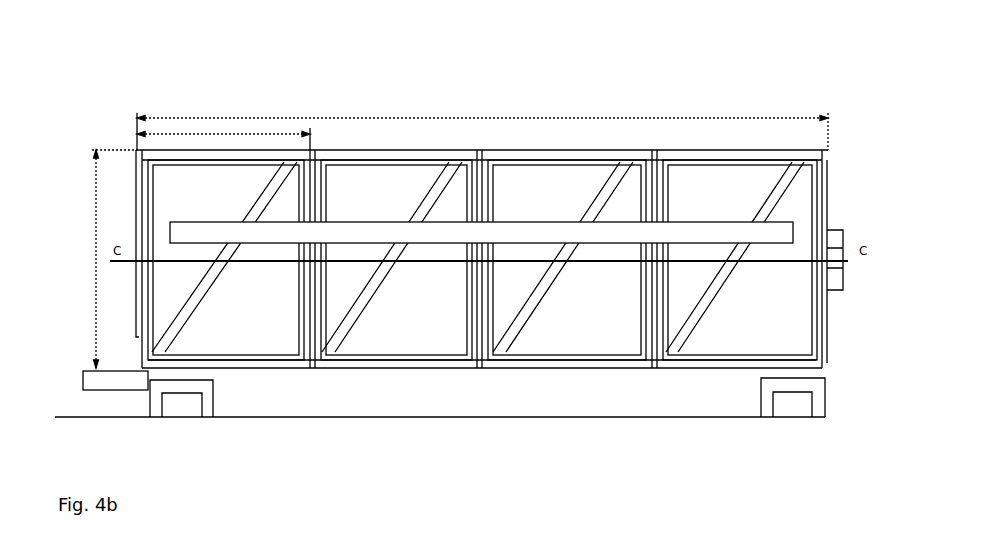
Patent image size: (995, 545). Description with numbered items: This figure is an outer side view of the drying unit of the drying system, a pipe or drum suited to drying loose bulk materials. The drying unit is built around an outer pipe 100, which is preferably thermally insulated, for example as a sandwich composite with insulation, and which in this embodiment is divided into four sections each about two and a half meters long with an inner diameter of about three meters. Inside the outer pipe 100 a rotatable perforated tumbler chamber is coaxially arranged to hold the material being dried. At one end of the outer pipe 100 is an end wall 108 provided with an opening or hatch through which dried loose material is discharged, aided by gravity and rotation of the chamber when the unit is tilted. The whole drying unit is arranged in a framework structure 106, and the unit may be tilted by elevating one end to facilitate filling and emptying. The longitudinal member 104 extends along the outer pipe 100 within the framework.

The outer pipe 100 is at (482, 260).
The connecting bar 104 is at (765, 230).
The framework structure 106 is at (453, 150).
The end wall 108 is at (135, 197).